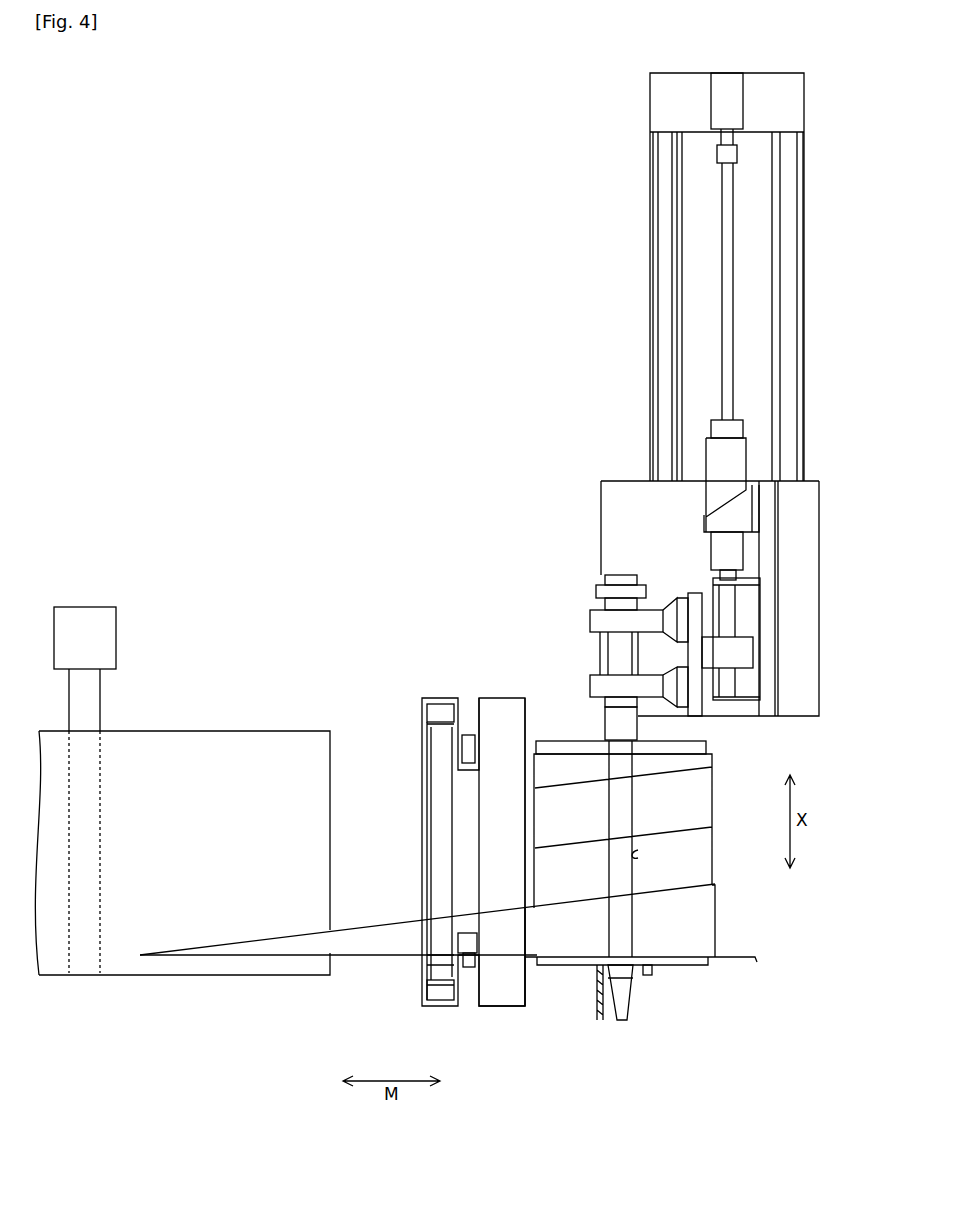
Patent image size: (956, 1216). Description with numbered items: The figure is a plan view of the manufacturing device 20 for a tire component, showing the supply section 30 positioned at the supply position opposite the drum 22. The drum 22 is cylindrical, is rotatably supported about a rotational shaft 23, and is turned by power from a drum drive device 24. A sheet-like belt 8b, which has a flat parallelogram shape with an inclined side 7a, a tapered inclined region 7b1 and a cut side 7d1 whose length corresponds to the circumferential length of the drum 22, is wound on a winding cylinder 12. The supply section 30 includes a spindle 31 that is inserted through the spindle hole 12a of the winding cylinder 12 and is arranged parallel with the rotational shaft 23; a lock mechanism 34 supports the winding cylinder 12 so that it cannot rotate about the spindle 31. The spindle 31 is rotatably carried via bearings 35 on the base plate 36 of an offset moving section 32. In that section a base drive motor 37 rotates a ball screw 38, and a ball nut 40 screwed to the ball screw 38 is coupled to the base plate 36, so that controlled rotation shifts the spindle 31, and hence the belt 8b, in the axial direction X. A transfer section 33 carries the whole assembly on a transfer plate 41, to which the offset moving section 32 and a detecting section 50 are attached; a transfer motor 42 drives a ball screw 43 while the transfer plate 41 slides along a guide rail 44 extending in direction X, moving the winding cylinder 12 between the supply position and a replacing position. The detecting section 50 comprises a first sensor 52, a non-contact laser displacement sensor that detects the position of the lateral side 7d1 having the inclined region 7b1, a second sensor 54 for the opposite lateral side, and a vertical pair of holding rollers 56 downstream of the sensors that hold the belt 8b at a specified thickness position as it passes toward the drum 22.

The manufacturing device 20 is at (270, 372).
The drum 22 is at (212, 741).
The rotational shaft 23 is at (102, 712).
The drum drive device 24 is at (98, 630).
The supply section 30 is at (555, 462).
The spindle 31 is at (642, 798).
The offset moving section 32 is at (688, 530).
The transfer section 33 is at (636, 313).
The lock mechanism 34 is at (648, 975).
The bearings 35 is at (615, 615).
The base plate 36 is at (695, 597).
The base drive motor 37 is at (717, 459).
The ball screw 38 is at (730, 608).
The ball nut 40 is at (740, 650).
The transfer plate 41 is at (812, 481).
The transfer motor 42 is at (717, 100).
The ball screw 43 is at (727, 388).
The guide rail 44 is at (656, 368).
The detecting section 50 is at (432, 700).
The first sensor 52 is at (470, 967).
The second sensor 54 is at (466, 740).
The holding rollers 56 is at (430, 770).
The inclined side 7a is at (366, 928).
The inclined region 7b1 is at (371, 945).
The cut side 7d1 is at (512, 960).
The sheet-like belt 8b is at (718, 920).
The winding cylinder 12 is at (700, 963).
The spindle hole 12a is at (638, 855).